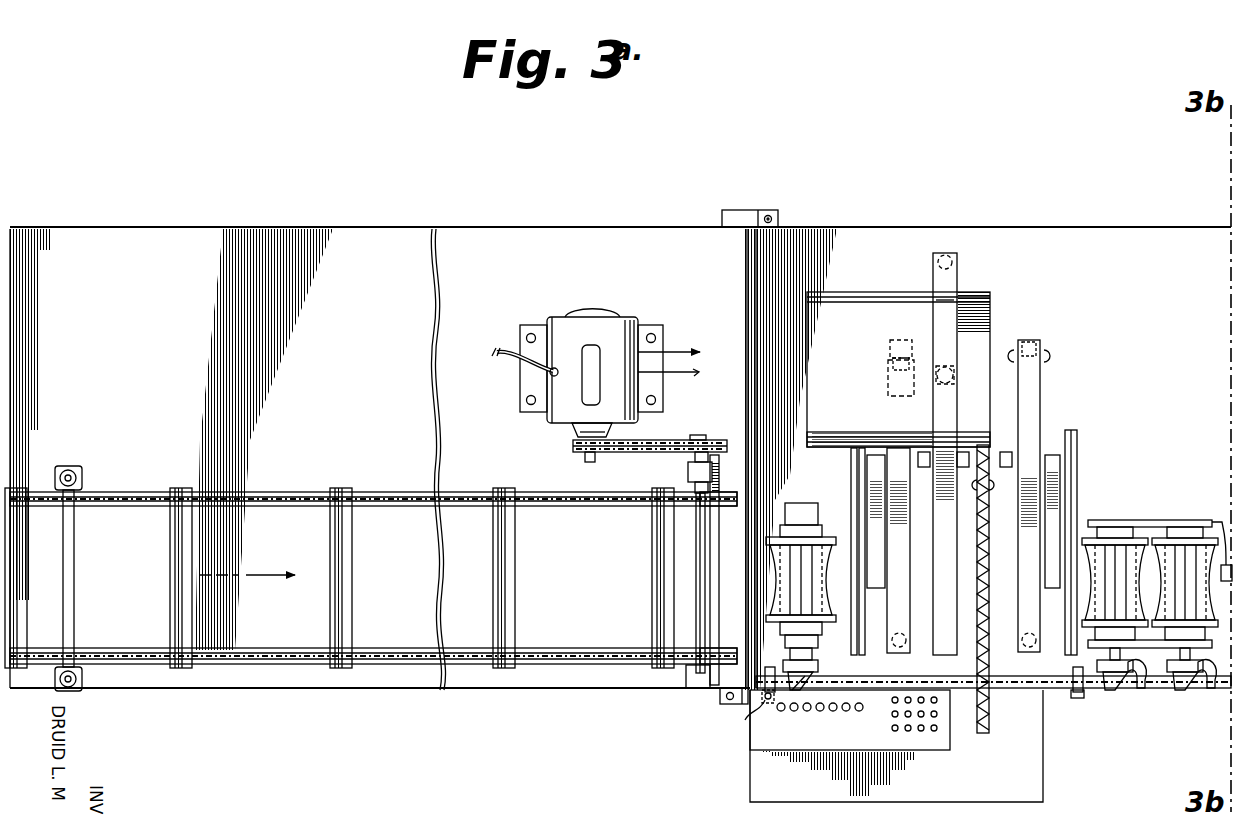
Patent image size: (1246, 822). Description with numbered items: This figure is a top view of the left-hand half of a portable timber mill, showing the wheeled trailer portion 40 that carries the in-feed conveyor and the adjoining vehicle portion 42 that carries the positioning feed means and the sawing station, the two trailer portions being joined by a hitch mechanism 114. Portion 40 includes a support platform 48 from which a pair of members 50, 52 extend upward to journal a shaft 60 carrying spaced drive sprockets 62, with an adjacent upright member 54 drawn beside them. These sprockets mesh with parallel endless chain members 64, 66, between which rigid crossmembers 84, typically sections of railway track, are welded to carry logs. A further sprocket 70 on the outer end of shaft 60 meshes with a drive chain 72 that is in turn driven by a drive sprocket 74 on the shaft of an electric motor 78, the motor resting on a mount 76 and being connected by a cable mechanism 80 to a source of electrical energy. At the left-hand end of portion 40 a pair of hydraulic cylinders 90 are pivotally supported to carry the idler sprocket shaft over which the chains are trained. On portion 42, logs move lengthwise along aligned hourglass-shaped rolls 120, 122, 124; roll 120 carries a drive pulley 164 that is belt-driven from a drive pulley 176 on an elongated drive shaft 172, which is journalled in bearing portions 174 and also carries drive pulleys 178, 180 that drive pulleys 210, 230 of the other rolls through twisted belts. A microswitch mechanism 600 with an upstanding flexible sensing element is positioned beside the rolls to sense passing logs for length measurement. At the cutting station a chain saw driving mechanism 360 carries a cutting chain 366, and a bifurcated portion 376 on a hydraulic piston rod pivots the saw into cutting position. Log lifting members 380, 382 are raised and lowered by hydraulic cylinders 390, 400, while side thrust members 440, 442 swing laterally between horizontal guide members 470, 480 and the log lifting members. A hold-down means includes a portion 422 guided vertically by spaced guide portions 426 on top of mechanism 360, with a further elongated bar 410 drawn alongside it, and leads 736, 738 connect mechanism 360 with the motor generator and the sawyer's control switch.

The portion of the timber mill 40 is at (207, 224).
The vehicle portion of the timber mill 42 is at (1142, 220).
The support platform 48 is at (372, 413).
The member 50 is at (685, 680).
The member 52 is at (688, 470).
The vertical guide bar 54 is at (707, 612).
The shaft 60 is at (702, 563).
The sprockets 62 is at (722, 506).
The chain member 64 is at (552, 505).
The chain member 66 is at (560, 658).
The sprocket 70 is at (705, 438).
The drive chain 72 is at (655, 450).
The drive sprocket 74 is at (594, 452).
The motor mount nozzle 76 is at (582, 436).
The electric motor 78 is at (603, 318).
The cable mechanism 80 is at (497, 362).
The rigid members 84 is at (185, 610).
The hydraulic cylinders 90 is at (80, 468).
The hitch mechanism 114 is at (795, 214).
The roll 120 is at (772, 528).
The roll 122 is at (1122, 523).
The roll 124 is at (1176, 523).
The drive pulley 164 is at (808, 664).
The drive shaft 172 is at (1000, 688).
The bearing portions 174 is at (755, 708).
The drive pulley 176 is at (808, 684).
The drive pulley 178 is at (1103, 695).
The drive pulley 180 is at (1174, 700).
The drive pulley 210 is at (1148, 686).
The drive pulley 230 is at (1199, 686).
The chain saw driving mechanism 360 is at (862, 290).
The cutting chain 366 is at (988, 722).
The bifurcated portion 376 is at (988, 485).
The log lifting member 380 is at (886, 392).
The log lifting member 382 is at (1033, 380).
The hydraulic cylinder 390 is at (910, 630).
The hydraulic cylinder 400 is at (1033, 648).
The lever bar 410 is at (957, 316).
The portion of the hold-down means 422 is at (942, 646).
The guide portions 426 is at (960, 452).
The side thrust member 440 is at (876, 460).
The side thrust member 442 is at (1052, 458).
The guide member 470 is at (852, 450).
The guide member 480 is at (1075, 450).
The microswitch mechanism 600 is at (1220, 528).
The lead 736 is at (672, 372).
The lead 738 is at (676, 352).